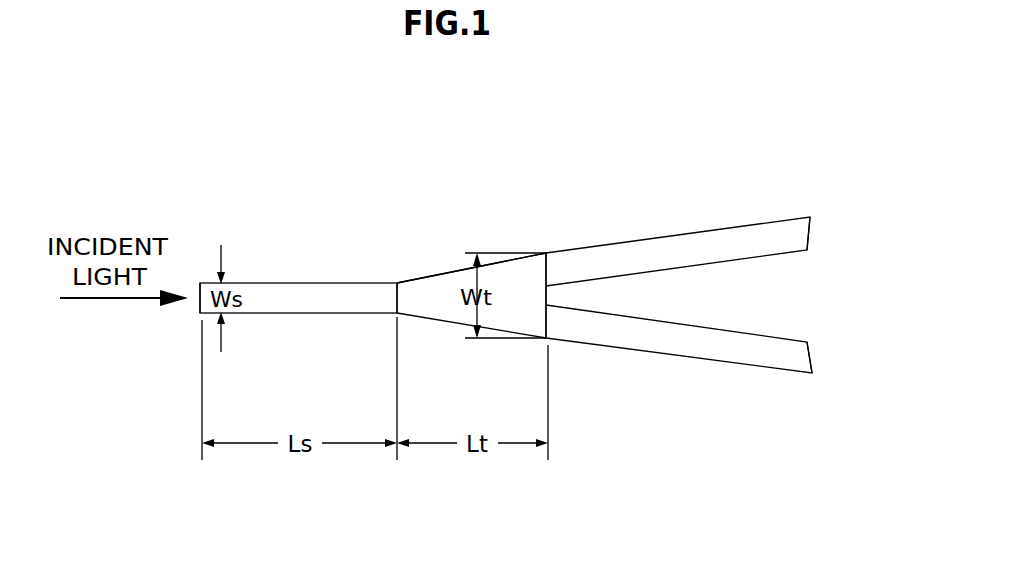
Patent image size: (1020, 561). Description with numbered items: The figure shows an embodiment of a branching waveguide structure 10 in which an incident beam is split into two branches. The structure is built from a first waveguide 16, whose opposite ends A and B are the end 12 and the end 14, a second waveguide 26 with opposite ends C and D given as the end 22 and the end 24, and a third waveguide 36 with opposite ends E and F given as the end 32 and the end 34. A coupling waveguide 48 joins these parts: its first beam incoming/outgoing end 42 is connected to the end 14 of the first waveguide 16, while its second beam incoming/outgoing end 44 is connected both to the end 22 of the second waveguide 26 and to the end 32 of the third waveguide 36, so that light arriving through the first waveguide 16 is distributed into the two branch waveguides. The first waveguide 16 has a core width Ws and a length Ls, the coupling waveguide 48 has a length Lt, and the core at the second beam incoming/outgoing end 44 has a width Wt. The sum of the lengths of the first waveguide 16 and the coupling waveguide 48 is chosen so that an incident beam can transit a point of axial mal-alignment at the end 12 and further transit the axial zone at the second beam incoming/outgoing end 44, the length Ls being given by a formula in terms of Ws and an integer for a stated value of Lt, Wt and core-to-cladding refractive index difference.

The branching waveguide structure 10 is at (395, 200).
The end A of the first waveguide 12 is at (198, 307).
The end B of the first waveguide 14 is at (397, 290).
The first waveguide 16 is at (283, 299).
The end C of the second waveguide 22 is at (545, 270).
The end D of the second waveguide 24 is at (810, 232).
The second waveguide 26 is at (680, 248).
The end E of the third waveguide 32 is at (546, 320).
The end F of the third waveguide 34 is at (812, 356).
The third waveguide 36 is at (685, 343).
The first beam incoming/outgoing end 42 is at (397, 299).
The second beam incoming/outgoing end 44 is at (548, 297).
The coupling waveguide 48 is at (447, 290).